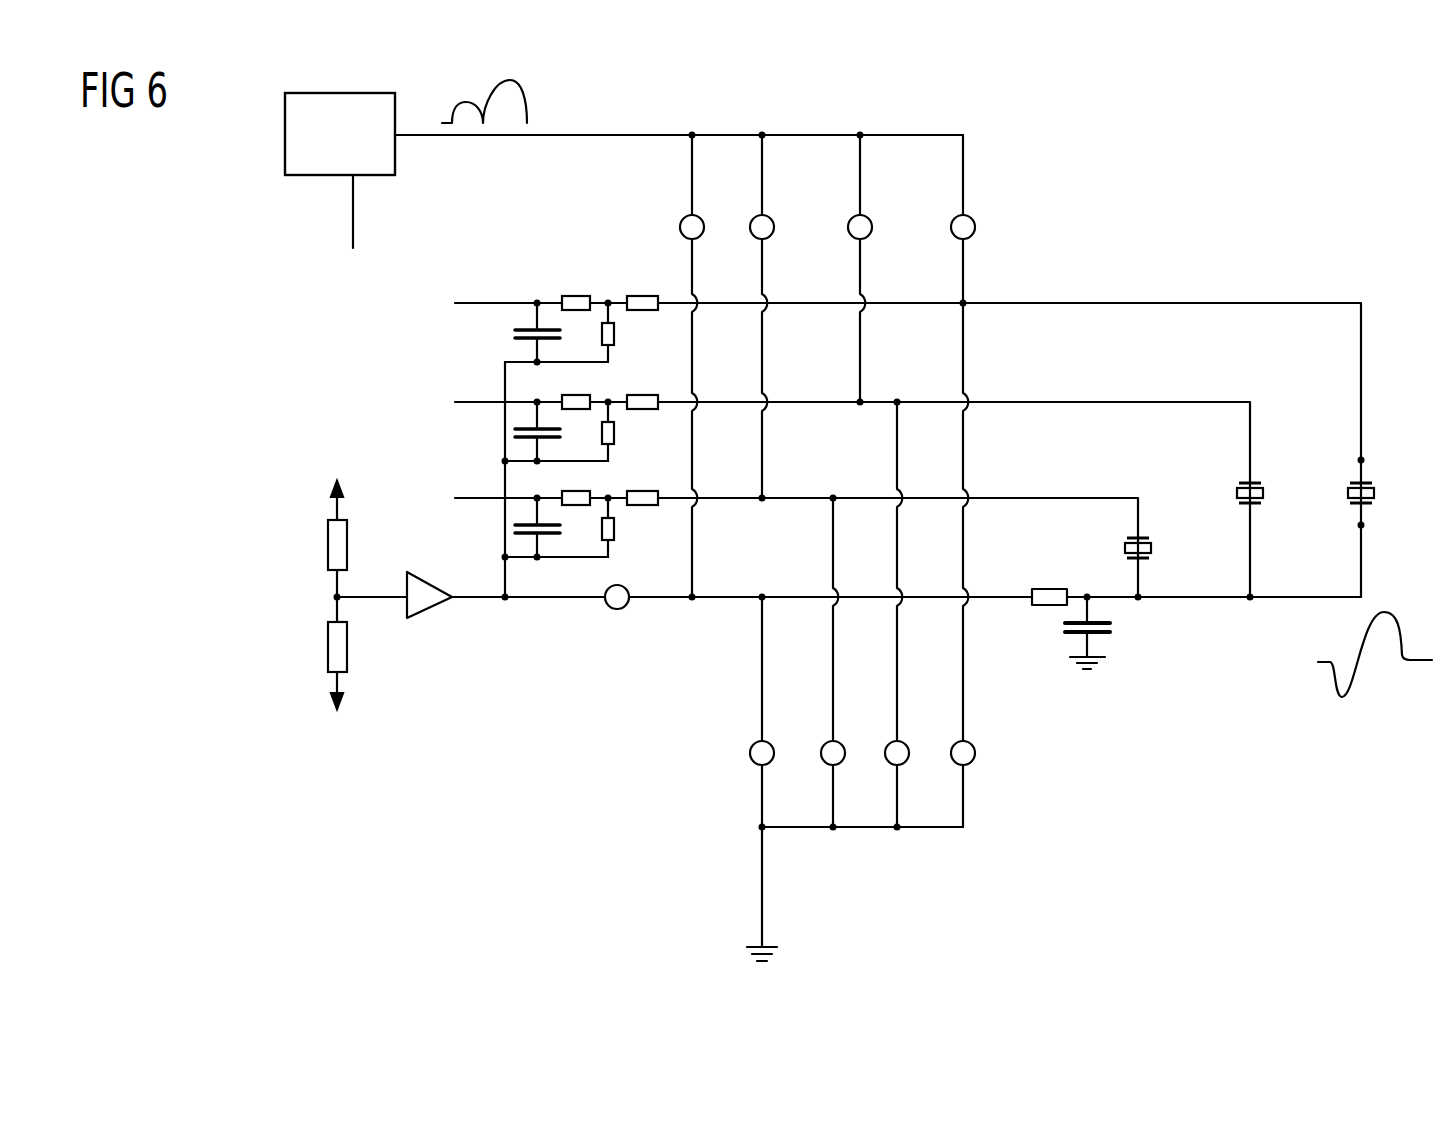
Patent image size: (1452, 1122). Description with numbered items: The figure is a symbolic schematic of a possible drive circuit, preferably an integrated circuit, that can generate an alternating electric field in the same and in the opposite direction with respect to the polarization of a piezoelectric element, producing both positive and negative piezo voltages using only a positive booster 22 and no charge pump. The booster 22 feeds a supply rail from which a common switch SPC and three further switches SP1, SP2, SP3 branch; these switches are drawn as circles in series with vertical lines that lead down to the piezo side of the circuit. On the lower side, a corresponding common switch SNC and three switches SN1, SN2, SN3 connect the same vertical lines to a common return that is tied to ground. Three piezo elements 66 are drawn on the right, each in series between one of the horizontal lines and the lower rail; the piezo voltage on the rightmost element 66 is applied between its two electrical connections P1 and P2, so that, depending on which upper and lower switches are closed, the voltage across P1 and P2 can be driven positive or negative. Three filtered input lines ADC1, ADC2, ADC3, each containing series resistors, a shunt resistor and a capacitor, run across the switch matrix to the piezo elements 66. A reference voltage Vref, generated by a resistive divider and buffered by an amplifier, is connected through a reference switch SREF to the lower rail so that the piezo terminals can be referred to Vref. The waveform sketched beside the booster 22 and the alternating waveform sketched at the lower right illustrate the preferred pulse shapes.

The booster 22 is at (285, 135).
The piezoelectric element 66 is at (1237, 492).
The electrical connection P1 is at (1365, 459).
The electrical connection P2 is at (1365, 525).
The common transmit switch SPC is at (683, 219).
The first transmit switch SP1 is at (771, 219).
The second transmit switch SP2 is at (869, 219).
The third transmit switch SP3 is at (972, 222).
The reference switch SREF is at (617, 609).
The common receive switch SNC is at (753, 745).
The first receive switch SN1 is at (824, 745).
The second receive switch SN2 is at (888, 745).
The third receive switch SN3 is at (954, 745).
The first analog-to-digital converter input ADC1 is at (525, 325).
The second analog-to-digital converter input ADC2 is at (525, 424).
The third analog-to-digital converter input ADC3 is at (525, 520).
The reference voltage Vref is at (316, 595).